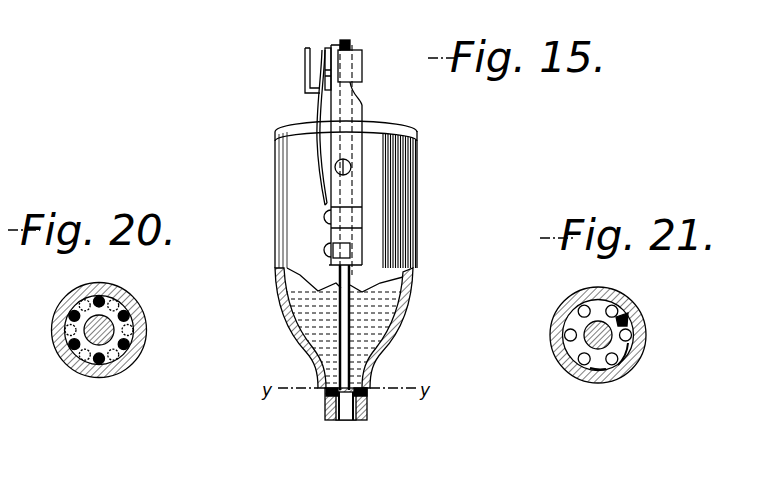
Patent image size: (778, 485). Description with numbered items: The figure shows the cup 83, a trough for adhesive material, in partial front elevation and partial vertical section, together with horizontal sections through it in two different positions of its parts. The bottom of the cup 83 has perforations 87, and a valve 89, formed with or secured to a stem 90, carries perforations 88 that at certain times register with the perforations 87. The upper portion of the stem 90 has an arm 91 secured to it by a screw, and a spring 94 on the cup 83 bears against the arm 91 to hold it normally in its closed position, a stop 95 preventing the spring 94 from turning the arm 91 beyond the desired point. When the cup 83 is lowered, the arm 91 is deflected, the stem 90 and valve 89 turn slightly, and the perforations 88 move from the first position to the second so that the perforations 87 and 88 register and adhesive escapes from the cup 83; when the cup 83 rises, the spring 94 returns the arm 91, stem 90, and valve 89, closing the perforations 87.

In FIG. 15, the cup 83 is at (295, 250).
In FIG. 20, the cup 83 is at (54, 312).
In FIG. 21, the cup 83 is at (556, 333).
In FIG. 15, the perforations 87 is at (362, 419).
In FIG. 20, the perforations 87 is at (128, 329).
In FIG. 21, the perforations 87 is at (628, 335).
In FIG. 15, the perforations 88 is at (368, 412).
In FIG. 20, the perforations 88 is at (121, 346).
In FIG. 21, the perforations 88 is at (633, 352).
In FIG. 15, the valve 89 is at (330, 393).
In FIG. 20, the valve 89 is at (113, 360).
In FIG. 21, the valve 89 is at (598, 362).
In FIG. 15, the stem 90 is at (357, 46).
In FIG. 20, the stem 90 is at (96, 336).
In FIG. 21, the stem 90 is at (594, 342).
In FIG. 15, the arm 91 is at (327, 47).
In FIG. 15, the spring 94 is at (315, 160).
In FIG. 15, the stop 95 is at (345, 40).